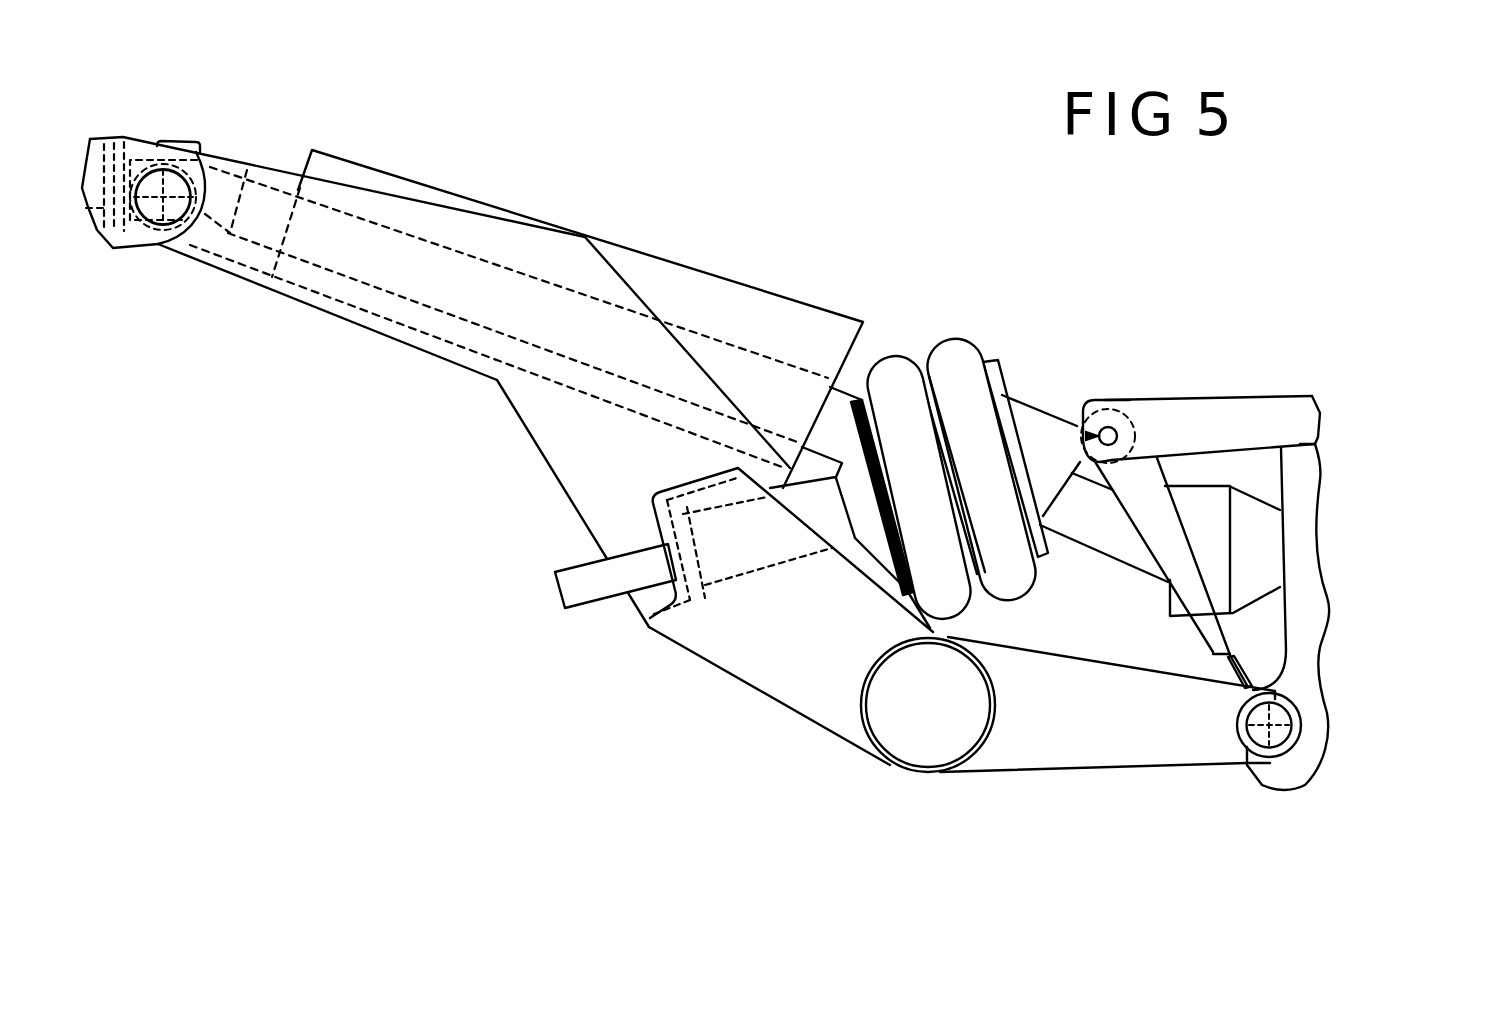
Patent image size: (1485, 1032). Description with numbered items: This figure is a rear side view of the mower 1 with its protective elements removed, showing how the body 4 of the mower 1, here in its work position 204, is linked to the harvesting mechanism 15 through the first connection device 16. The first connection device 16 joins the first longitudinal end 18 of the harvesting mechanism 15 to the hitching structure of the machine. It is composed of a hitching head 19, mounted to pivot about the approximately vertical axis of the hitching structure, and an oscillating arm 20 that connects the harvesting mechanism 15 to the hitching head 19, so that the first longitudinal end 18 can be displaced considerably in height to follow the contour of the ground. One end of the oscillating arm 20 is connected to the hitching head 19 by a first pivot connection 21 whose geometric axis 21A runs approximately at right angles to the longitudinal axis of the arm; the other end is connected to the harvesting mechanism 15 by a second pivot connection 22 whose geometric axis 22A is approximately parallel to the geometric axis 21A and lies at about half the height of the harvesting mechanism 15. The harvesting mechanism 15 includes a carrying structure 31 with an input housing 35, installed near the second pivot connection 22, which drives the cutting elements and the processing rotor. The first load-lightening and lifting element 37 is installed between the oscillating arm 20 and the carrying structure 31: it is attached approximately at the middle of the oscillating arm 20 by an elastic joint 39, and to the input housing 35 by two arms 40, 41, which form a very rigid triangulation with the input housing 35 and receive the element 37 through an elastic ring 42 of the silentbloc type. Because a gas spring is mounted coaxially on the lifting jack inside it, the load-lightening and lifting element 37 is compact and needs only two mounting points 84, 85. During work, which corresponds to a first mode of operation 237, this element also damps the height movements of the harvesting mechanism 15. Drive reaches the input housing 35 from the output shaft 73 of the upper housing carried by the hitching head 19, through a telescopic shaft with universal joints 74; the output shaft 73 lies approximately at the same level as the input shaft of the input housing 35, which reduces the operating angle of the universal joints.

The mower 1 is at (1200, 250).
The body 4 is at (737, 272).
The work position 204 is at (876, 221).
The first mode of operation 237 is at (1064, 216).
The harvesting mechanism 15 is at (1232, 358).
The first connection device 16 is at (565, 483).
The first longitudinal end 18 is at (1222, 400).
The hitching head 19 is at (130, 243).
The oscillating arm 20 is at (503, 393).
The first pivot connection 21 is at (180, 230).
The geometric axis of first pivot connection 21A is at (172, 188).
The second pivot connection 22 is at (1246, 768).
The geometric axis of second pivot connection 22A is at (1282, 740).
The carrying structure 31 is at (1310, 405).
The input housing 35 is at (1318, 577).
The first load-lightening and lifting element 37 is at (954, 336).
The elastic joint 39 is at (698, 608).
The arm 40 is at (1307, 436).
The arm 41 is at (1218, 643).
The elastic ring 42 is at (1110, 427).
The output shaft 73 is at (108, 133).
The telescopic shaft with universal joints 74 is at (1082, 540).
The mounting point 84 is at (1068, 418).
The mounting point 85 is at (667, 582).